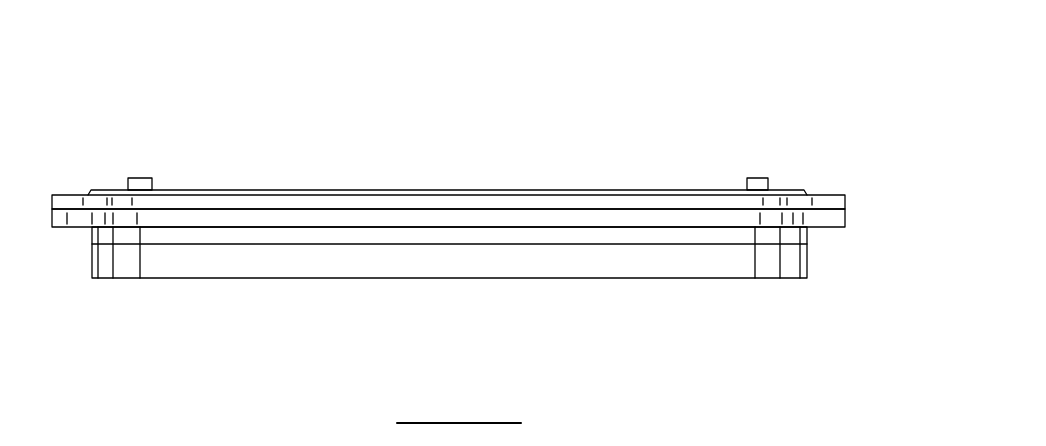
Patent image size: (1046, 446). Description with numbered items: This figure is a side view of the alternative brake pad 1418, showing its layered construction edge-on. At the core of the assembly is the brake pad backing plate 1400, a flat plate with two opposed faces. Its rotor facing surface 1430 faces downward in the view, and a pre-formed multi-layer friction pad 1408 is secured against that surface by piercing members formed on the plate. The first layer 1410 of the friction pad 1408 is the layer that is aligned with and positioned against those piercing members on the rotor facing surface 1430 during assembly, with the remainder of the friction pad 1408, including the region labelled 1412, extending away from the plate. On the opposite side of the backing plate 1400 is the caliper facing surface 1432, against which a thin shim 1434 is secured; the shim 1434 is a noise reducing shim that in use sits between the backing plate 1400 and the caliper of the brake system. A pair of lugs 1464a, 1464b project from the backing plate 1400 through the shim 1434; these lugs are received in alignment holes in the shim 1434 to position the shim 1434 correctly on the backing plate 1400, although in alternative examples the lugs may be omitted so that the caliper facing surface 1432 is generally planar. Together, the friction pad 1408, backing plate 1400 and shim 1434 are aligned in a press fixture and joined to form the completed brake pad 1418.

The brake pad 1418 is at (828, 112).
The brake pad backing plate 1400 is at (822, 217).
The caliper facing surface 1432 is at (828, 195).
The rotor facing surface 1430 is at (815, 228).
The shim 1434 is at (545, 190).
The lug 1464a is at (143, 178).
The lug 1464b is at (752, 178).
The friction pad 1408 is at (637, 291).
The first layer 1410 is at (163, 235).
The housing body 1412 is at (352, 262).